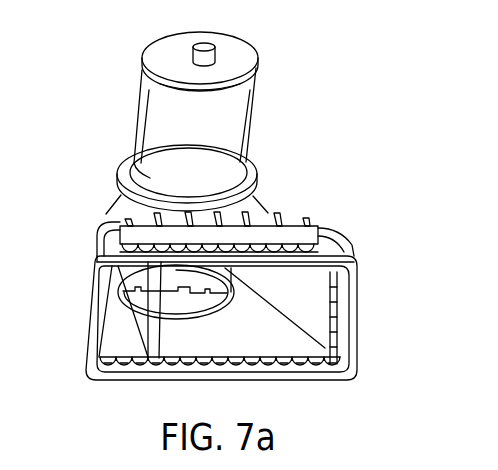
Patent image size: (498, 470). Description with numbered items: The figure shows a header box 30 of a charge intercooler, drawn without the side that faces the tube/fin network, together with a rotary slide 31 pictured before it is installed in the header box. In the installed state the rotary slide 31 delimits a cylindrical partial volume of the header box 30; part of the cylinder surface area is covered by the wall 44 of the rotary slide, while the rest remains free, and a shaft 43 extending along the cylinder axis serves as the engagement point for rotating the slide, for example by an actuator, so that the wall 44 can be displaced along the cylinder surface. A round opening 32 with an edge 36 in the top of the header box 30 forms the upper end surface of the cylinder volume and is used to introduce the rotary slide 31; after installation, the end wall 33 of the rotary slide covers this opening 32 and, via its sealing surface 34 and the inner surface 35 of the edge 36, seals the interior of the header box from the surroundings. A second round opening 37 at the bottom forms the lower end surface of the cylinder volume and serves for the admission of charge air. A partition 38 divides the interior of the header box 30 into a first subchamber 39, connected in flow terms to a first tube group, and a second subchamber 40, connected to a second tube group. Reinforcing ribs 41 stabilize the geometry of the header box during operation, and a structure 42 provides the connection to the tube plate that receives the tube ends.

The header box 30 is at (55, 74).
The rotary slide 31 is at (211, 115).
The round opening 32 is at (136, 138).
The end wall 33 is at (199, 47).
The sealing surface 34 is at (197, 109).
The inner surface 35 is at (206, 174).
The edge 36 is at (208, 194).
The round opening 37 is at (287, 272).
The partition 38 is at (142, 294).
The first subchamber 39 is at (122, 340).
The second subchamber 40 is at (220, 383).
The reinforcing ribs 41 is at (198, 219).
The structure for connection to a tube plate 42 is at (241, 303).
The shaft 43 is at (211, 33).
The wall 44 is at (197, 117).